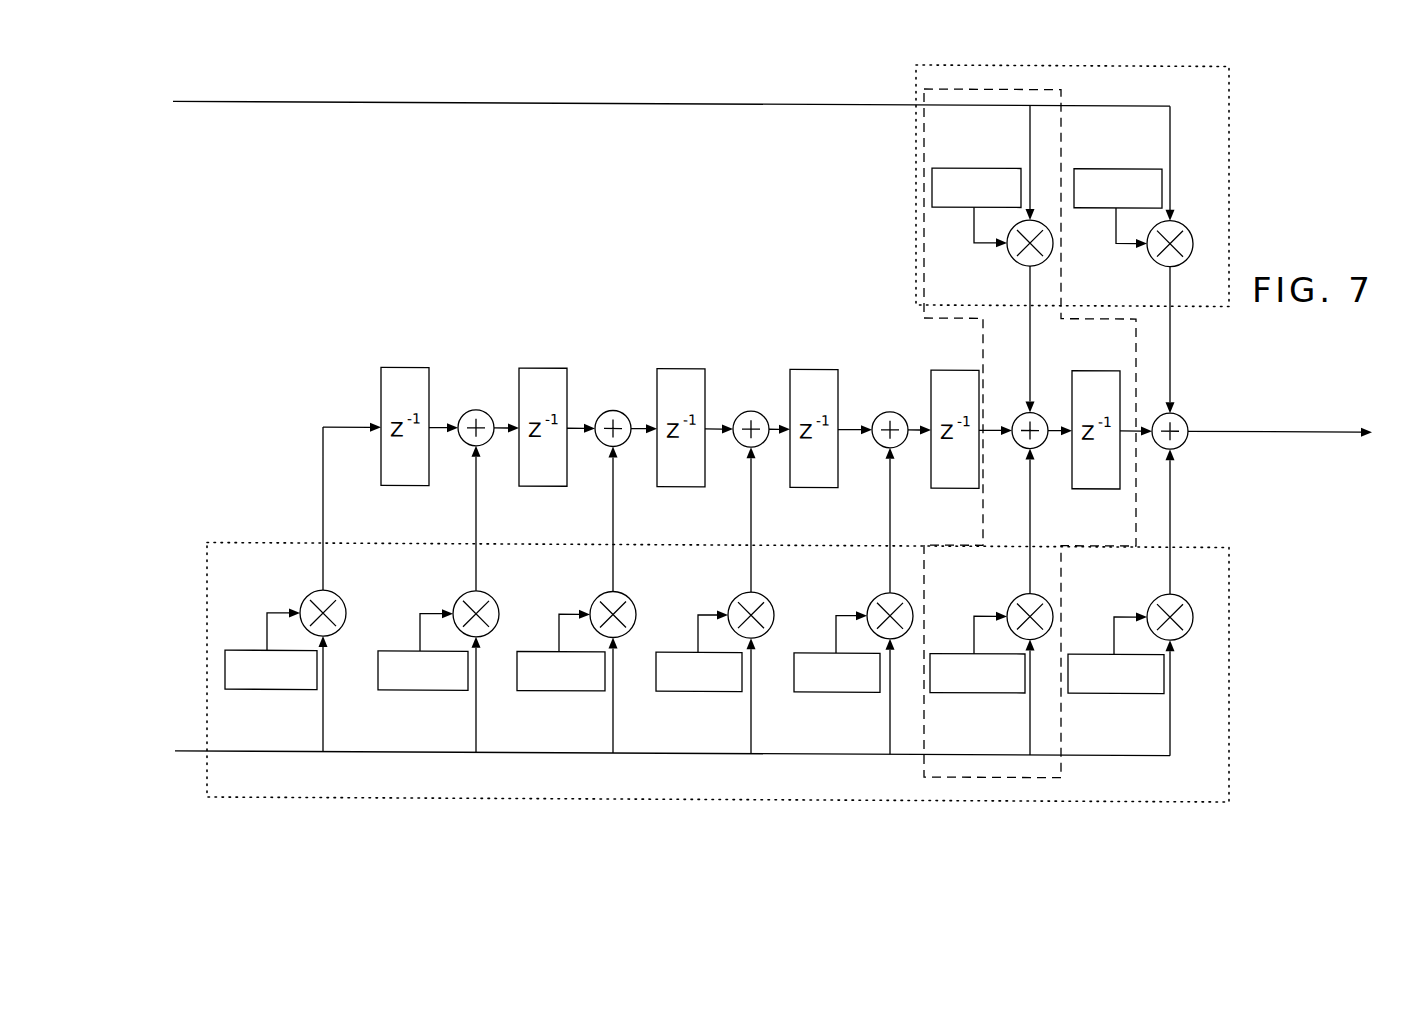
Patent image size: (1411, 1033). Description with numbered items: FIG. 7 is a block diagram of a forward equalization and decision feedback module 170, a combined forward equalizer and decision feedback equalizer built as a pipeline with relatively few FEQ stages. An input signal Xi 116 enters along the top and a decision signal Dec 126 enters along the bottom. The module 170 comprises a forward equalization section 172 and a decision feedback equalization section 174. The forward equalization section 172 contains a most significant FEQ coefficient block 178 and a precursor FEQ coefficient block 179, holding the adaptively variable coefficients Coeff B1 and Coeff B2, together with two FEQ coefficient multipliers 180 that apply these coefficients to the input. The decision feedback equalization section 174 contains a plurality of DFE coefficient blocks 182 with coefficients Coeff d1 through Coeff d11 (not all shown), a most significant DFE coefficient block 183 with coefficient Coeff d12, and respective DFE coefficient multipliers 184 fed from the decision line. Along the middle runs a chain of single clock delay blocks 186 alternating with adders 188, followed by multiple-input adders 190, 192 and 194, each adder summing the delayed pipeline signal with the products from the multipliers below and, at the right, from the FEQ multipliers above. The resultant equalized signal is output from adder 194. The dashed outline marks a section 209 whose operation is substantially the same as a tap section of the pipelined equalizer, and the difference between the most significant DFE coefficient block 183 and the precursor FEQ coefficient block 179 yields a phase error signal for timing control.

The input signal Xi 116 is at (190, 105).
The decision signal Dec 126 is at (190, 752).
The forward equalization and decision feedback module 170 is at (1305, 157).
The forward equalization section 172 is at (1229, 134).
The decision feedback equalization section 174 is at (1229, 743).
The most significant FEQ coefficient block 178 is at (955, 167).
The precursor FEQ coefficient block 179 is at (1105, 167).
The FEQ coefficient multiplier 180 is at (1050, 243).
The DFE coefficient block 182 is at (247, 692).
The most significant DFE coefficient block 183 is at (1128, 692).
The DFE coefficient multiplier 184 is at (320, 594).
The single clock delay block 186 is at (415, 487).
The adder 188 is at (473, 411).
The multiple-input adder 190 is at (877, 445).
The multiple-input adder 192 is at (1018, 446).
The multiple-input adder 194 is at (1185, 442).
The section 209 is at (1053, 124).